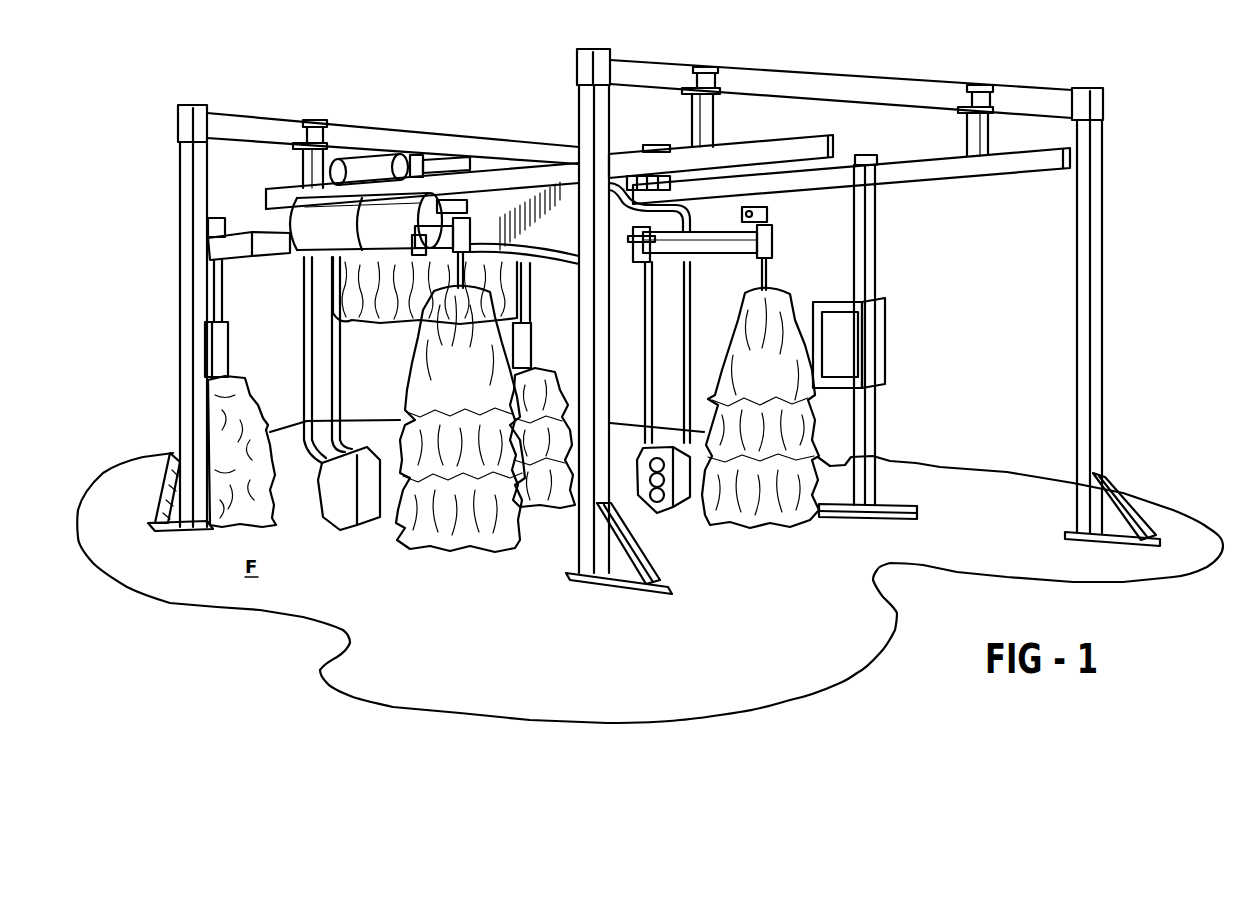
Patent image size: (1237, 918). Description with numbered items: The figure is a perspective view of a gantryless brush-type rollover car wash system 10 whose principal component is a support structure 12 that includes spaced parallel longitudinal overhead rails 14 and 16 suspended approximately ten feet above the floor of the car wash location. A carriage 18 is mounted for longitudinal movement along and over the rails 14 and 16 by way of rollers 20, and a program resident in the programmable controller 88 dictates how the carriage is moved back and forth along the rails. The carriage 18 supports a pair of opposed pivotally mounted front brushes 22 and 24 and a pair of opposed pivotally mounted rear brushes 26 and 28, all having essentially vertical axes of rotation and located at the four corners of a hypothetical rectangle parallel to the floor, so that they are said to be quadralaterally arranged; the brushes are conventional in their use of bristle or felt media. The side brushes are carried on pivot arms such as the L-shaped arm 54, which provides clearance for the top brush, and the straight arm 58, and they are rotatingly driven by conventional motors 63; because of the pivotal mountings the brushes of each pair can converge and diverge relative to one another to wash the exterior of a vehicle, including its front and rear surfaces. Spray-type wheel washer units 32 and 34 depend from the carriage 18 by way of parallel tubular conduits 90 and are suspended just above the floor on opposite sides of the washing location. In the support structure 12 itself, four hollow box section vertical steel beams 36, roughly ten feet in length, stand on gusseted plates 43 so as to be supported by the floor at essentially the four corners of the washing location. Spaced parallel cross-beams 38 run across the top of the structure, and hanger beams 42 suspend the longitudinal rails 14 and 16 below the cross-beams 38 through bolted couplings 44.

The brush-type rollover car wash system 10 is at (470, 80).
The support structure 12 is at (836, 72).
The longitudinal overhead rail 14 is at (777, 134).
The longitudinal overhead rail 16 is at (940, 152).
The carriage 18 is at (380, 158).
The rollers 20 is at (340, 162).
The front brush 22 is at (410, 385).
The front brush 24 is at (793, 290).
The rear brush 26 is at (248, 375).
The rear brush 28 is at (548, 372).
The wheel washer unit 32 is at (367, 527).
The wheel washer unit 34 is at (697, 500).
The vertical steel beam 36 is at (181, 182).
The cross-beam 38 is at (290, 120).
The hanger beam 42 is at (302, 175).
The gusseted plate 43 is at (647, 567).
The bolted coupling 44 is at (312, 120).
The pivot arm 54 is at (440, 207).
The pivot arm 58 is at (727, 258).
The motor 63 is at (772, 213).
The programmable controller 88 is at (887, 375).
The tubular conduit 90 is at (302, 416).